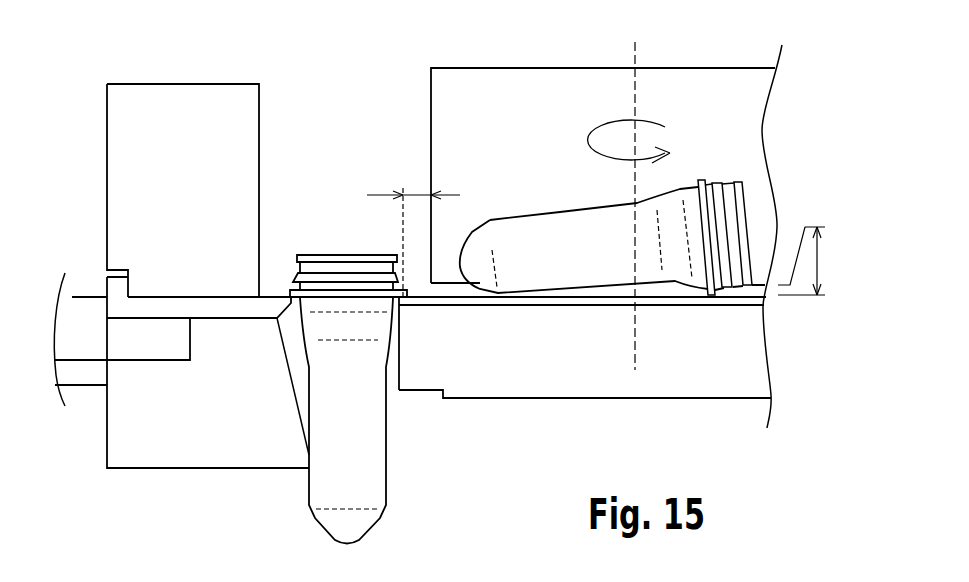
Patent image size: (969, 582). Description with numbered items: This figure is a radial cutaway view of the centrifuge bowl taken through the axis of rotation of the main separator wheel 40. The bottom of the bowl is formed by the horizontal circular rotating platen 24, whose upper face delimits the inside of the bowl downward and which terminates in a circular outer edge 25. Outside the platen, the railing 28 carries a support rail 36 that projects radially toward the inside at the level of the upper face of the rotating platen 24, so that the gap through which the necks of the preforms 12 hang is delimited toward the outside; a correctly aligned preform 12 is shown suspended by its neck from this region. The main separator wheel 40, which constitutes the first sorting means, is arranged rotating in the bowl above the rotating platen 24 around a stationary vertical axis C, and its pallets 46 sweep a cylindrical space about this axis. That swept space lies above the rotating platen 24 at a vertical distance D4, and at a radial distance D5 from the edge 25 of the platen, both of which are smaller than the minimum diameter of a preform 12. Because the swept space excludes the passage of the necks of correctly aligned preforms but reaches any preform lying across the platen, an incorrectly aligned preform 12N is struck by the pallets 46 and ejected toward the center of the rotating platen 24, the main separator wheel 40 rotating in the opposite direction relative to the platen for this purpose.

The railing 28 is at (207, 122).
The support rail 36 is at (272, 307).
The preform 12 is at (357, 473).
The incorrectly aligned preform 12N is at (678, 255).
The pallet 46 is at (510, 108).
The rotating platen 24 is at (708, 345).
The outer edge of the rotating platen 25 is at (399, 363).
The main separator wheel 40 is at (710, 116).
The stationary axis C is at (635, 52).
The radial distance D5 is at (420, 195).
The vertical distance D4 is at (815, 261).